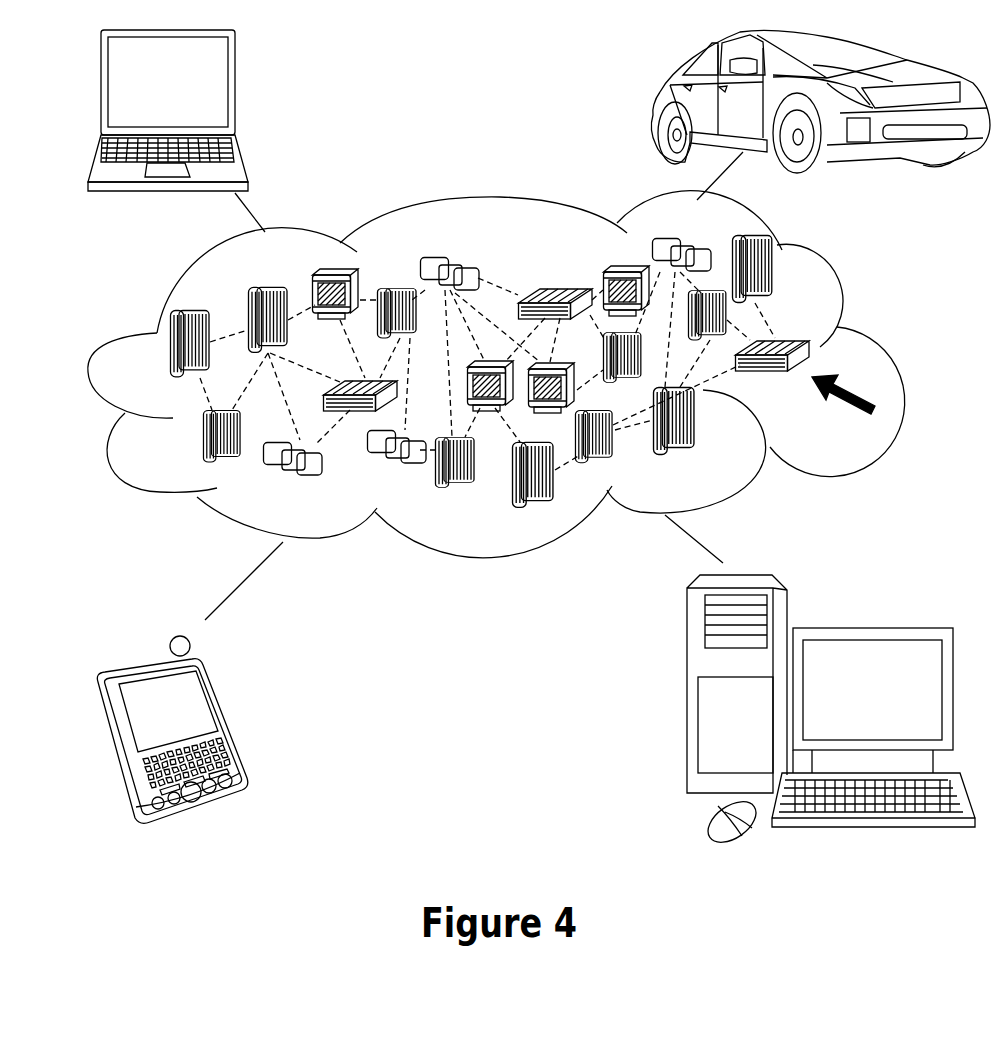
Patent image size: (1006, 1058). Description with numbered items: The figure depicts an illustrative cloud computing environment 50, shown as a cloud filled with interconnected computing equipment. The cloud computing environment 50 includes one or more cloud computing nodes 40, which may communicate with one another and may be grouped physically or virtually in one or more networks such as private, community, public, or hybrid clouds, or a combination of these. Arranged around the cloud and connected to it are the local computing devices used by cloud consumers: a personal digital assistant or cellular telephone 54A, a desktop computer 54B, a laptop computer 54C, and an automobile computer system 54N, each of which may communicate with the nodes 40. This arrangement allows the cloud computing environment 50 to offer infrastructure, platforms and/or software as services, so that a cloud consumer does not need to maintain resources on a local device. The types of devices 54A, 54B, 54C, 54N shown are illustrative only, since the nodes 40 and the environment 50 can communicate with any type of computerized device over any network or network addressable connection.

The cloud computing environment 50 is at (872, 352).
The cloud computing nodes 40 is at (862, 401).
The personal digital assistant (PDA) or cellular telephone 54A is at (230, 718).
The desktop computer 54B is at (870, 628).
The laptop computer 54C is at (237, 86).
The automobile computer system 54N is at (653, 101).